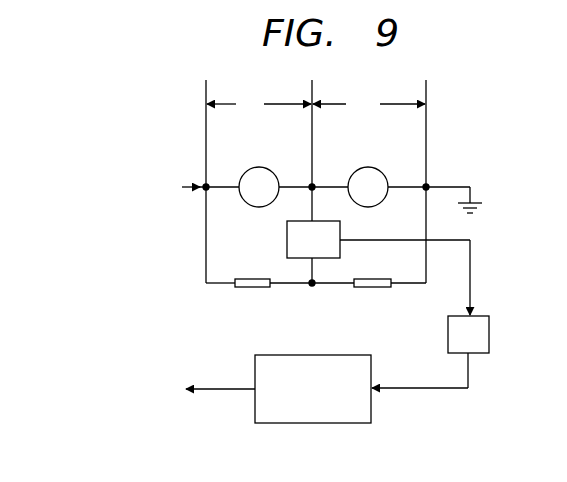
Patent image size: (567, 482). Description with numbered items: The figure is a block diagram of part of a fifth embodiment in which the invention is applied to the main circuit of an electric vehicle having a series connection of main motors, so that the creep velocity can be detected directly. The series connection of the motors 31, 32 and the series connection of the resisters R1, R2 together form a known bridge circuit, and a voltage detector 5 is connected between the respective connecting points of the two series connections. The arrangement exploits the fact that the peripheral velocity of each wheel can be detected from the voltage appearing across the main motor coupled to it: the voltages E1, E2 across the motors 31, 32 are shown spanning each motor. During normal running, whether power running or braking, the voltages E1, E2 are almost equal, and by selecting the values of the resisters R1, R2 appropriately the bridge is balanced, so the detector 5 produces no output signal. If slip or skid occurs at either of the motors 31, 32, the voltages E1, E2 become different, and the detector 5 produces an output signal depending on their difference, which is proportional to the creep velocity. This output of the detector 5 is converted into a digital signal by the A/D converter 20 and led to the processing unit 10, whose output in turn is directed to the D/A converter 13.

The main motor 31 is at (259, 167).
The main motor 32 is at (374, 168).
The voltage detector 5 is at (287, 240).
The A/D converter 20 is at (490, 333).
The processing unit 10 is at (297, 424).
The D/A converter 13 is at (143, 374).
The resister R1 is at (253, 288).
The resister R2 is at (378, 288).
The voltage across motor E1 is at (259, 105).
The voltage across motor E2 is at (369, 105).